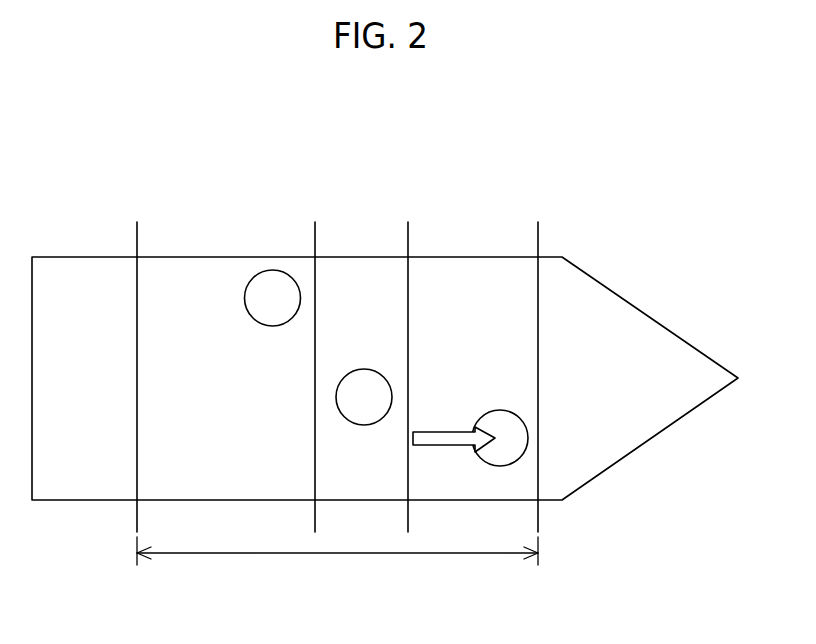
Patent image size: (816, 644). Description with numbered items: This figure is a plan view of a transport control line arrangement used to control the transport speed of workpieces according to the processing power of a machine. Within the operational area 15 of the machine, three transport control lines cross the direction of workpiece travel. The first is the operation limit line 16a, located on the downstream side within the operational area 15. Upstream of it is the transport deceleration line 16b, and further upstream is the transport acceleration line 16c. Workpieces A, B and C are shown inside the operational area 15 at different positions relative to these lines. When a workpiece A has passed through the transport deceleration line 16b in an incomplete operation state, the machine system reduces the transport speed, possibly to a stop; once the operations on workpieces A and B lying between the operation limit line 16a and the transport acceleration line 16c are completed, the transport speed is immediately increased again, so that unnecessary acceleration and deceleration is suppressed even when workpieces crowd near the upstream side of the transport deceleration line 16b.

The operational area 15 is at (330, 554).
The operation limit line 16a is at (539, 238).
The transport deceleration line 16b is at (409, 238).
The transport acceleration line 16c is at (316, 238).
The workpiece A is at (480, 459).
The workpiece B is at (364, 369).
The object C is at (272, 326).